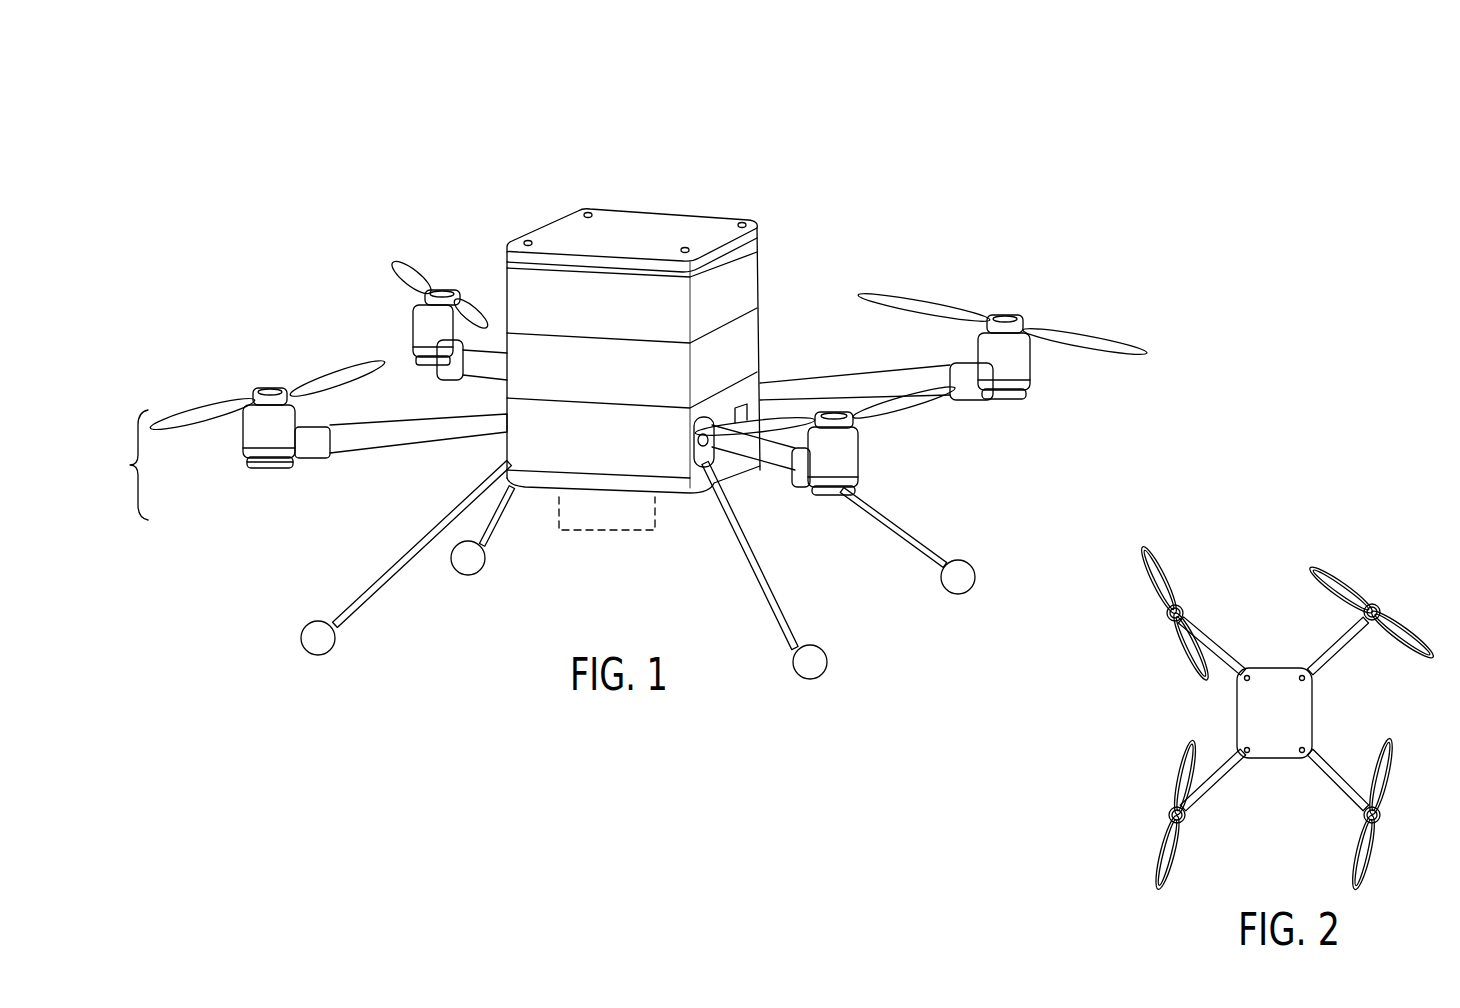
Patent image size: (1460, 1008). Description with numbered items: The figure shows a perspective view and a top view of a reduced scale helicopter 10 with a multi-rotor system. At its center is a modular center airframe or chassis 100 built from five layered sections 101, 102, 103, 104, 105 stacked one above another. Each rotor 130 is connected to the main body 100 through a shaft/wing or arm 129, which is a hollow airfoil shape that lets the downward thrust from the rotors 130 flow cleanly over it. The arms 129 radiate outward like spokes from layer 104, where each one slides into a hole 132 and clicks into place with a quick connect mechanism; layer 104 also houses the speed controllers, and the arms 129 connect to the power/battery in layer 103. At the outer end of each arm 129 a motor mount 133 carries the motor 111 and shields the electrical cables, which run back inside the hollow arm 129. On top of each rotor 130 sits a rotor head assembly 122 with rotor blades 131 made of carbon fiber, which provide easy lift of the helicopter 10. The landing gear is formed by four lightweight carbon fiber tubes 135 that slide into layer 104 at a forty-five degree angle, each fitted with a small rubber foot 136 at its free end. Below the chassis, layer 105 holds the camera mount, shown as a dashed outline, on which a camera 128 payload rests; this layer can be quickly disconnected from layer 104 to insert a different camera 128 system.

In FIG. 1, the reduced scale helicopter 10 is at (852, 134).
In FIG. 1, the modular center airframe or chassis 100 is at (721, 206).
In FIG. 2, the modular center airframe or chassis 100 is at (1273, 760).
In FIG. 1, the layered section 101 is at (771, 238).
In FIG. 1, the layered section 102 is at (755, 284).
In FIG. 1, the layered section 103 is at (755, 338).
In FIG. 1, the layered section 104 is at (755, 384).
In FIG. 1, the layered section 105 is at (742, 468).
In FIG. 1, the motor 111 is at (243, 437).
In FIG. 1, the rotor head assembly 122 is at (119, 465).
In FIG. 1, the camera 128 is at (608, 533).
In FIG. 1, the shaft/wing 129 is at (385, 452).
In FIG. 2, the shaft/wing 129 is at (1333, 662).
In FIG. 1, the rotor 130 is at (245, 372).
In FIG. 1, the rotor blade 131 is at (427, 272).
In FIG. 2, the rotor blade 131 is at (1343, 580).
In FIG. 1, the hole 132 is at (693, 460).
In FIG. 1, the motor mount 133 is at (273, 470).
In FIG. 1, the tube 135 is at (385, 590).
In FIG. 1, the feet 136 is at (338, 652).